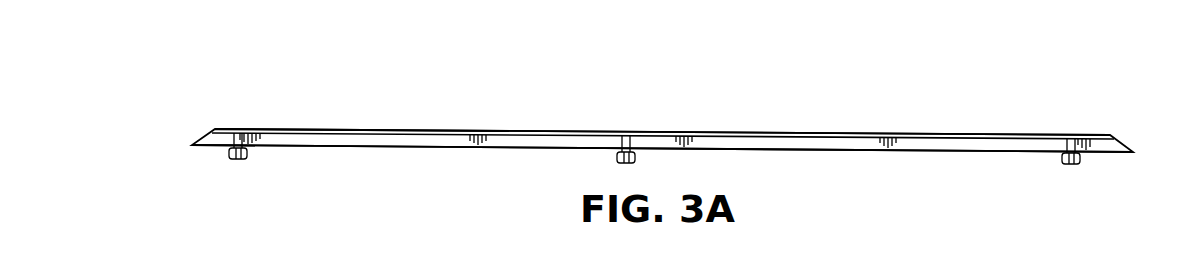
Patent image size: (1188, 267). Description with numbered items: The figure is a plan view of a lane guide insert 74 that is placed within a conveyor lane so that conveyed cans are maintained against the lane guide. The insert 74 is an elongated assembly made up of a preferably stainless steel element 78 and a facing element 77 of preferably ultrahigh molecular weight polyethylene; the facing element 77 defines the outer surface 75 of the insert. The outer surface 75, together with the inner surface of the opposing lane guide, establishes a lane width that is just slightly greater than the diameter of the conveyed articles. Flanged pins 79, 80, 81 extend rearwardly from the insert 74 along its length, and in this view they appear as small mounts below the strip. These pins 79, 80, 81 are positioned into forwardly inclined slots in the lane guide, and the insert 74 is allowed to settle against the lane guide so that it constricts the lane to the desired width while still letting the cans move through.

The lane guide insert 74 is at (520, 112).
The outer surface 75 is at (752, 133).
The facing element 77 is at (401, 132).
The stainless steel element 78 is at (818, 150).
The flanged pin 79 is at (1061, 161).
The flanged pin 80 is at (636, 159).
The flanged pin 81 is at (248, 156).